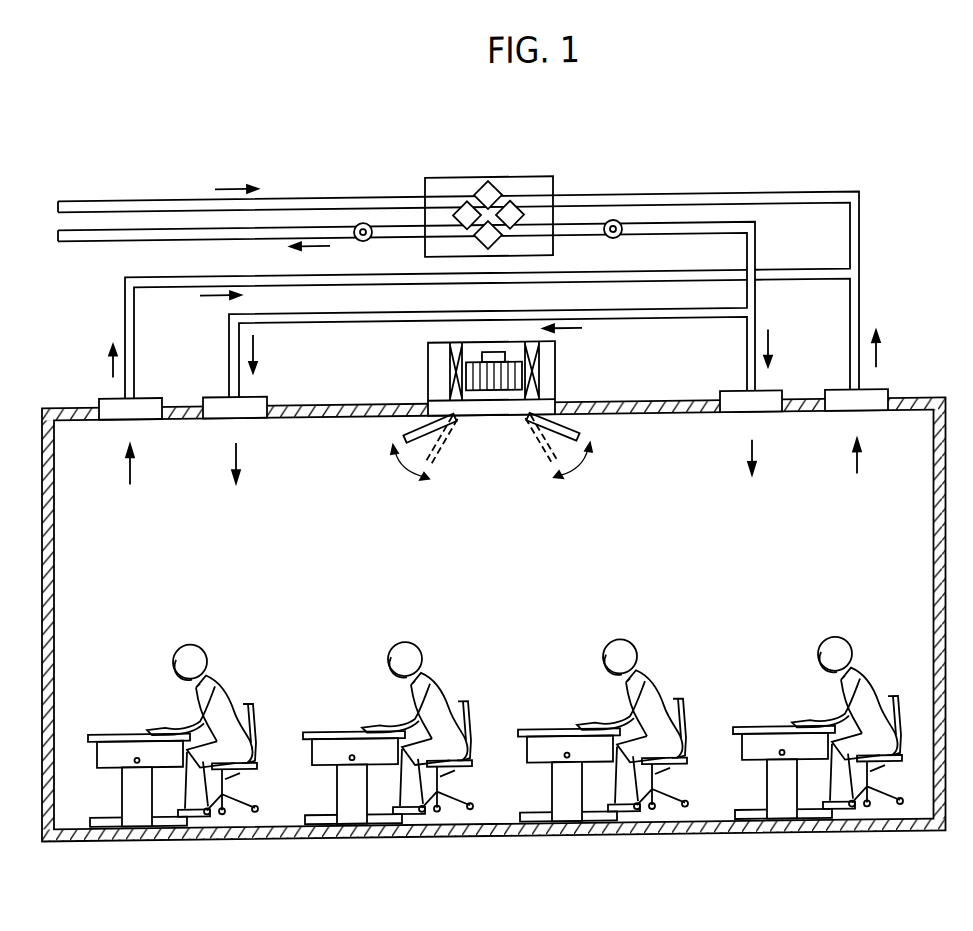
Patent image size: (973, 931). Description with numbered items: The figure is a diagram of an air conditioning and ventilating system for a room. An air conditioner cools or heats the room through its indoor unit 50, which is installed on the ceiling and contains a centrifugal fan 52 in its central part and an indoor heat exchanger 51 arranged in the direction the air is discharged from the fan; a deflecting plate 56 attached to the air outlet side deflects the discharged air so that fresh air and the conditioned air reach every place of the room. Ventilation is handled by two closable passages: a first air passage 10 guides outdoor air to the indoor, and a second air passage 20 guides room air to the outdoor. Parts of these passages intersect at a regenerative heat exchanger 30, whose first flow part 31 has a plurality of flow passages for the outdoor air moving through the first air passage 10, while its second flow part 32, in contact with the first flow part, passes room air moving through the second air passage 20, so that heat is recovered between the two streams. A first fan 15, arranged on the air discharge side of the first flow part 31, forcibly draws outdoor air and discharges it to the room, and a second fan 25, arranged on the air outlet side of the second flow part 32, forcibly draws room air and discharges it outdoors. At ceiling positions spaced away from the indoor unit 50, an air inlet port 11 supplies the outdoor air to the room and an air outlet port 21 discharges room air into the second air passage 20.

The first air passage 10 is at (229, 346).
The air inlet port 11 is at (734, 405).
The first fan 15 is at (613, 221).
The second air passage 20 is at (125, 303).
The air outlet port 21 is at (867, 405).
The second fan 25 is at (363, 221).
The regenerative heat exchanger 30 is at (488, 178).
The first flow part 31 is at (456, 205).
The second flow part 32 is at (527, 197).
The indoor unit 50 is at (505, 406).
The indoor heat exchanger 51 is at (450, 383).
The centrifugal fan 52 is at (515, 375).
The deflecting plate 56 is at (573, 430).